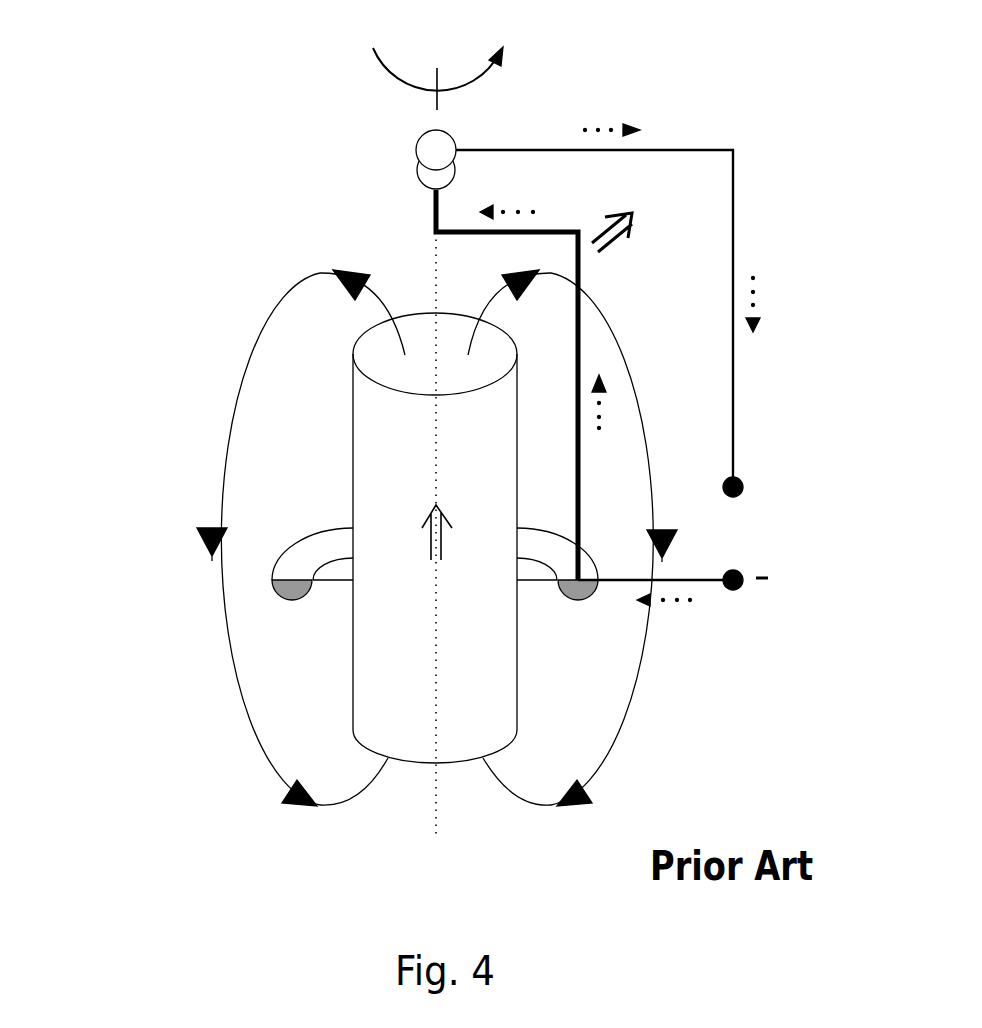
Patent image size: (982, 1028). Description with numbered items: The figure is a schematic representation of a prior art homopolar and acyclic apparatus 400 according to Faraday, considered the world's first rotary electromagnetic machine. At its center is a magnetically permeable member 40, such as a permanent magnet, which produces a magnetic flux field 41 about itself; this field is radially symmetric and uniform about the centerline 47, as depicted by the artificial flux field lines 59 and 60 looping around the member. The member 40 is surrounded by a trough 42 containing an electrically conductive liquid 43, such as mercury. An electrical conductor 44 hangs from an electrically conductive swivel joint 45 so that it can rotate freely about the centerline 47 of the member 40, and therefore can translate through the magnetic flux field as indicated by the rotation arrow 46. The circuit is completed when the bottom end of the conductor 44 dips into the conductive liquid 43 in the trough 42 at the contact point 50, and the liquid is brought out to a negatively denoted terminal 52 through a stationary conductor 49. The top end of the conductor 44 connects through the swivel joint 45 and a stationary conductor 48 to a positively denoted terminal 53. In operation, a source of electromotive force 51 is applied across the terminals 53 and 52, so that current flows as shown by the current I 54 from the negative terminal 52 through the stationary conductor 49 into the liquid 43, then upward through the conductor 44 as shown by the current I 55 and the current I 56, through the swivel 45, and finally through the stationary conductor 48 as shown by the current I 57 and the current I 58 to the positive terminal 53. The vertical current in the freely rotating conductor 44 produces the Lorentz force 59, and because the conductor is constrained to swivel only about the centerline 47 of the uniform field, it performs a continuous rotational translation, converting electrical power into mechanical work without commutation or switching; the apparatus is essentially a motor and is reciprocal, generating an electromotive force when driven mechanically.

The prior art homopolar motor assembly 400 is at (207, 93).
The magnetically permeable member 40 is at (517, 703).
The magnetic flux field 41 is at (433, 542).
The trough 42 is at (343, 538).
The electrically conductive liquid 43 is at (292, 588).
The electrical conductor 44 is at (583, 465).
The electrically conductive swivel joint 45 is at (416, 155).
The rotation indication 46 is at (412, 85).
The centerline 47 is at (437, 780).
The stationary conductor 48 is at (698, 148).
The stationary conductor 49 is at (702, 578).
The contact point 50 is at (587, 587).
The source of electromotive force 51 is at (770, 530).
The negatively denoted terminal 52 is at (743, 585).
The positively denoted terminal 53 is at (745, 478).
The current I 54 is at (697, 603).
The current I 55 is at (608, 400).
The current I 56 is at (537, 205).
The current I 57 is at (605, 123).
The current I 58 is at (755, 275).
The Lorentz force FF 59 is at (610, 247).
The artificial flux field line 60 is at (230, 388).